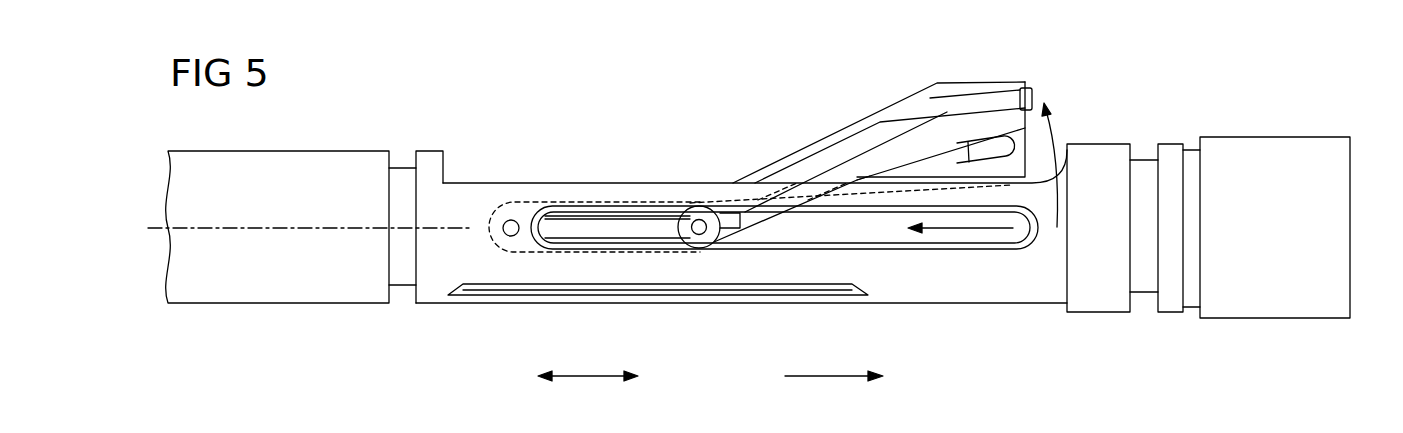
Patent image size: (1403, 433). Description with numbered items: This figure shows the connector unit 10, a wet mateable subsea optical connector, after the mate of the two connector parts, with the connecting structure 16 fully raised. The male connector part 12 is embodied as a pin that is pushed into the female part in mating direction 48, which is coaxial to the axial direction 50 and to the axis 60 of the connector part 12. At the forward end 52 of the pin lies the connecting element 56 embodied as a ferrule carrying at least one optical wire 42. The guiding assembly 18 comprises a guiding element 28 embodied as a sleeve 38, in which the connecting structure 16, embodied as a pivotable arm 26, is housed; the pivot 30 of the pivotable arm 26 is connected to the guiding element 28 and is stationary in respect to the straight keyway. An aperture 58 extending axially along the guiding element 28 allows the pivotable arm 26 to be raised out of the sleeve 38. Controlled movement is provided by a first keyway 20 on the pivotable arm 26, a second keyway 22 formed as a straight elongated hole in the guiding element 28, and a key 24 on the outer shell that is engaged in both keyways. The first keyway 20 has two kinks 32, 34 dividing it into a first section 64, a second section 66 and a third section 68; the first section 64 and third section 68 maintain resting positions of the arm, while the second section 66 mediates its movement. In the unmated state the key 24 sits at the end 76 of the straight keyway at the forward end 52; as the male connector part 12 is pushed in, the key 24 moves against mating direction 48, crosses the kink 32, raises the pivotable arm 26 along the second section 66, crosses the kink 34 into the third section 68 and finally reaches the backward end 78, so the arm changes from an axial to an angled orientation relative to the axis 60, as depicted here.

The connector unit 10 is at (741, 162).
The male connector part 12 is at (420, 100).
The connecting structure 16 is at (879, 102).
The guiding assembly 18 is at (880, 80).
The first keyway 20 is at (790, 163).
The second keyway 22 is at (877, 252).
The key 24 is at (708, 242).
The pivotable arm 26 is at (927, 92).
The guiding element 28 is at (658, 317).
The pivot 30 is at (508, 237).
The kink 32 is at (848, 175).
The kink 34 is at (700, 204).
The sleeve 38 is at (652, 298).
The optical wire 42 is at (1042, 65).
The mating direction 48 is at (825, 376).
The axial direction 50 is at (592, 376).
The forward end 52 is at (1272, 307).
The connecting element 56 is at (1000, 98).
The aperture 58 is at (495, 178).
The axis 60 is at (218, 230).
The first section 64 is at (908, 158).
The second section 66 is at (740, 214).
The third section 68 is at (592, 225).
The end of the straight keyway 76 is at (1032, 237).
The backward end 78 is at (531, 242).